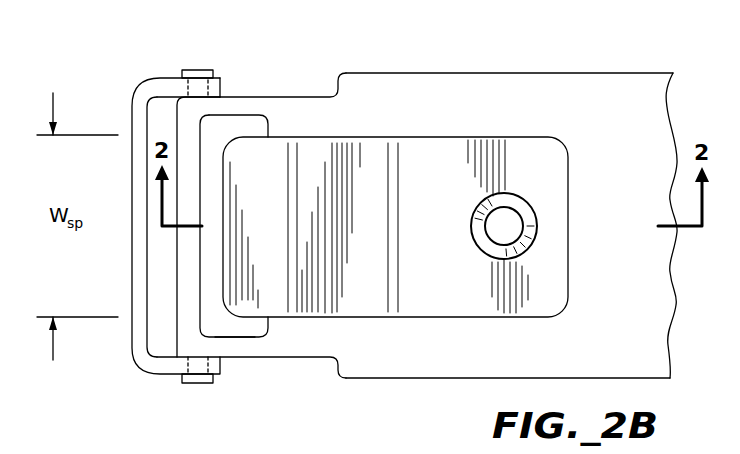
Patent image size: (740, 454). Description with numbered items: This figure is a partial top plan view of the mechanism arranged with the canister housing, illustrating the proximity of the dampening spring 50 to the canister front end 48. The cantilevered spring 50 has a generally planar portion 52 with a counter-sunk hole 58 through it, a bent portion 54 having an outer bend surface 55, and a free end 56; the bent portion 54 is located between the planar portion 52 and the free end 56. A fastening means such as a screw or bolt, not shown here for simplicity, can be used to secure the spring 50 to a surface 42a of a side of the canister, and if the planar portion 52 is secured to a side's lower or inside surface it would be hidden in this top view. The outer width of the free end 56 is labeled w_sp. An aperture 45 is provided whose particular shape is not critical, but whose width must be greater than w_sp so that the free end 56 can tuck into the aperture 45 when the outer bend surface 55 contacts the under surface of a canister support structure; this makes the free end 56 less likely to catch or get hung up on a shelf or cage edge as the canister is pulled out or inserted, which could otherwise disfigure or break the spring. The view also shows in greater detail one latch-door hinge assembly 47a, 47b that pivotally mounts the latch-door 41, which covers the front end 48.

The latch-door 41 is at (143, 343).
The surface of a side of canister 42a is at (637, 151).
The aperture 45 is at (237, 342).
The latch-door hinge assembly 47a is at (196, 70).
The latch-door hinge assembly 47b is at (195, 384).
The canister front end 48 is at (168, 107).
The dampening spring 50 is at (393, 118).
The generally planar portion 52 is at (446, 188).
The bent portion 54 is at (297, 118).
The outer bend surface 55 is at (306, 299).
The free end 56 is at (232, 130).
The counter-sunk hole 58 is at (483, 256).